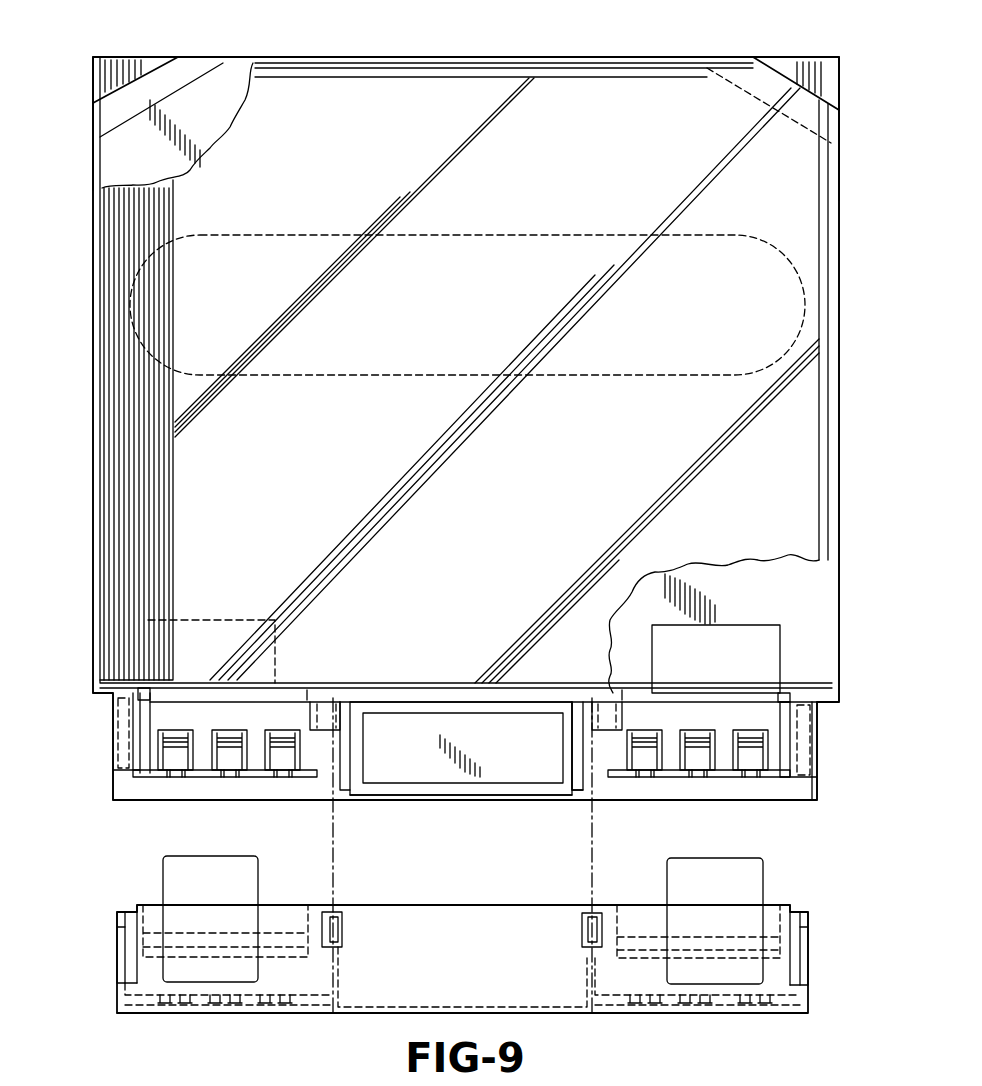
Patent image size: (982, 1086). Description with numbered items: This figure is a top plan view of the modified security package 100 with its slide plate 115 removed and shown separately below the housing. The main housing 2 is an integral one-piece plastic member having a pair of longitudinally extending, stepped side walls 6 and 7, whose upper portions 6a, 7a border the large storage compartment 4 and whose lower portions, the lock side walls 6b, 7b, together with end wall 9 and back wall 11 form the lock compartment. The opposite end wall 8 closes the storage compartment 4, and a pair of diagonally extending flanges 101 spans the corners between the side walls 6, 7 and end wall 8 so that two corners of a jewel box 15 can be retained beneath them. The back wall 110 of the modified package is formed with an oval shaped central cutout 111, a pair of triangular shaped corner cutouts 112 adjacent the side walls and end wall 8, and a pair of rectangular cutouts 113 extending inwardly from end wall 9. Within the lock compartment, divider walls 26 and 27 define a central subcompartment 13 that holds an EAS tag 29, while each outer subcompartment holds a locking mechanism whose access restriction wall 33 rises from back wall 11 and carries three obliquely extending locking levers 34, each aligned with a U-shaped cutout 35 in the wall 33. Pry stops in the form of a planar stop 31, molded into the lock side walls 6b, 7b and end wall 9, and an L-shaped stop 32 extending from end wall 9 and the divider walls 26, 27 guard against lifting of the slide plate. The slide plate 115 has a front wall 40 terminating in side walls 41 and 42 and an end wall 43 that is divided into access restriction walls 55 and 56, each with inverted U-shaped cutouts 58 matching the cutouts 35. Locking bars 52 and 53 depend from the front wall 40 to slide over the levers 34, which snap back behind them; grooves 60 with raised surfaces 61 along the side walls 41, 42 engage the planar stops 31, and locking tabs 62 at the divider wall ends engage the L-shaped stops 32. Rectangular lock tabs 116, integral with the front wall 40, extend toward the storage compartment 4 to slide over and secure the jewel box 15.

The main housing 2 is at (88, 278).
The storage compartment 4 is at (800, 213).
The side wall 6 is at (93, 428).
The side wall portion 6a is at (93, 123).
The lock side wall 6b is at (113, 785).
The side wall 7 is at (839, 385).
The side wall portion 7a is at (839, 130).
The lock side wall 7b is at (817, 788).
The end wall 8 is at (372, 57).
The end wall 9 is at (410, 692).
The back wall 11 is at (686, 718).
The subcompartment 13 is at (487, 730).
The jewel box 15 is at (435, 101).
The divider wall 26 is at (346, 758).
The divider wall 27 is at (578, 752).
The EAS tag 29 is at (500, 782).
The planar stop 31 is at (122, 728).
The L-shaped stop 32 is at (600, 718).
The access restriction wall 33 is at (158, 780).
The locking lever 34 is at (233, 745).
The cutout 35 is at (175, 779).
The front wall 40 is at (550, 992).
The side wall 41 is at (117, 917).
The side wall 42 is at (808, 918).
The end wall 43 is at (375, 1016).
The locking bar 52 is at (283, 942).
The locking bar 53 is at (643, 945).
The access restriction wall 55 is at (245, 1005).
The access restriction wall 56 is at (665, 1005).
The cutout 58 is at (228, 1005).
The groove 60 is at (130, 968).
The raised surface 61 is at (120, 946).
The locking tab 62 is at (337, 934).
The security package 100 is at (532, 55).
The flange 101 is at (149, 58).
The back wall 110 is at (230, 86).
The central cutout 111 is at (800, 306).
The corner cutout 112 is at (168, 82).
The rectangular cutout 113 is at (245, 628).
The slide plate 115 is at (150, 1018).
The lock tab 116 is at (176, 880).